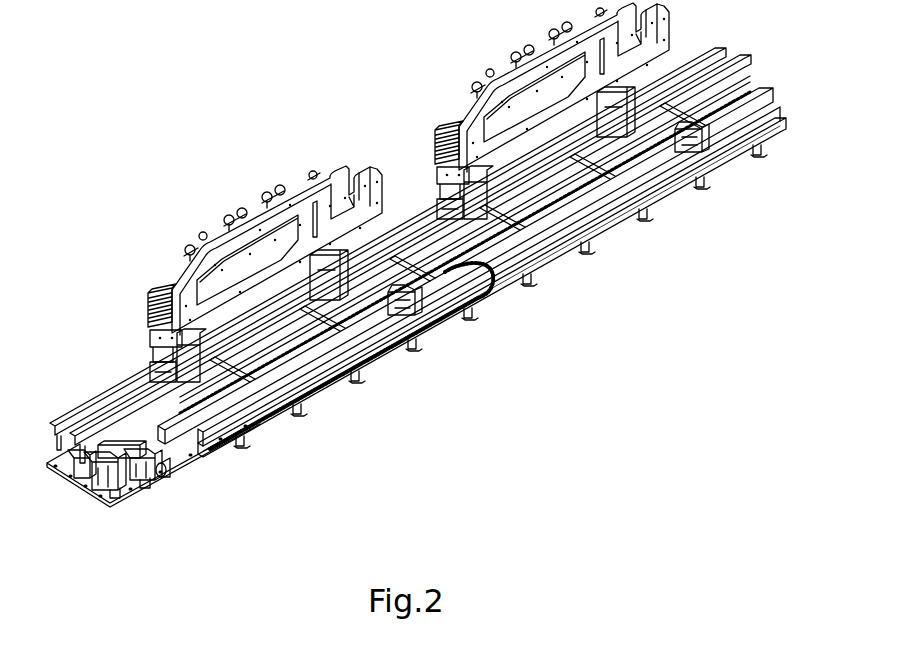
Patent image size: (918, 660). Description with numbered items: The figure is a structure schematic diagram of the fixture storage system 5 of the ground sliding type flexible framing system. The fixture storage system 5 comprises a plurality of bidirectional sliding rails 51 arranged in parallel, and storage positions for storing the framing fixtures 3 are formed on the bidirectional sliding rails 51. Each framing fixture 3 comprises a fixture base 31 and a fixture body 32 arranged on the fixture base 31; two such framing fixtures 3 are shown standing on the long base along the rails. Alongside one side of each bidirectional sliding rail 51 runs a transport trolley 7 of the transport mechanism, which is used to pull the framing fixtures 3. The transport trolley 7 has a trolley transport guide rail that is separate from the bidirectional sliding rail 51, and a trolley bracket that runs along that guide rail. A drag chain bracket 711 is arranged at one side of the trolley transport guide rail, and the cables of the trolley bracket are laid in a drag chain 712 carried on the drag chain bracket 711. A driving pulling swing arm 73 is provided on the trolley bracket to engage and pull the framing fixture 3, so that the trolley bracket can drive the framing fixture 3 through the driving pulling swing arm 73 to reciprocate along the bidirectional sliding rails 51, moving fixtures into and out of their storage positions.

The framing fixture 3 is at (104, 262).
The fixture base 31 is at (146, 367).
The fixture body 32 is at (168, 277).
The fixture storage system 5 is at (341, 139).
The bidirectional sliding rail 51 is at (108, 398).
The transport trolley 7 is at (450, 333).
The drag chain bracket 711 is at (512, 292).
The drag chain 712 is at (483, 303).
The driving pulling swing arm 73 is at (430, 217).